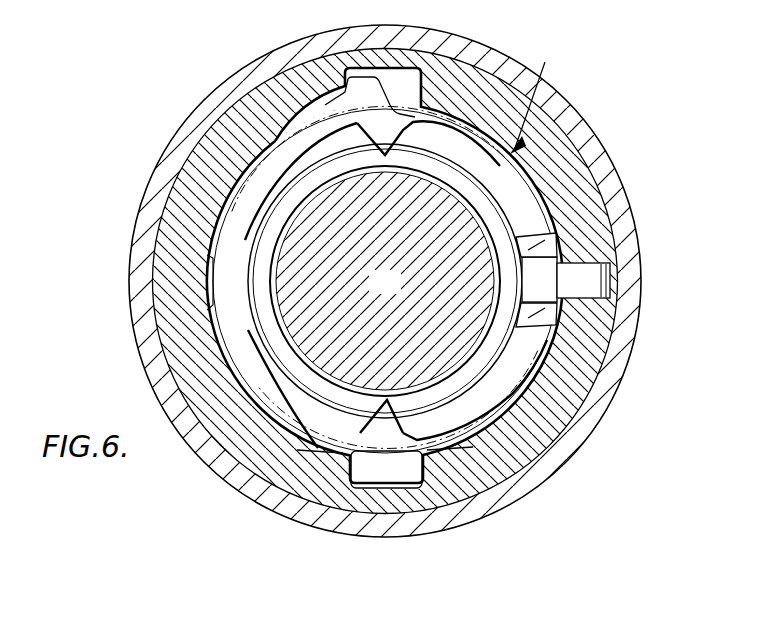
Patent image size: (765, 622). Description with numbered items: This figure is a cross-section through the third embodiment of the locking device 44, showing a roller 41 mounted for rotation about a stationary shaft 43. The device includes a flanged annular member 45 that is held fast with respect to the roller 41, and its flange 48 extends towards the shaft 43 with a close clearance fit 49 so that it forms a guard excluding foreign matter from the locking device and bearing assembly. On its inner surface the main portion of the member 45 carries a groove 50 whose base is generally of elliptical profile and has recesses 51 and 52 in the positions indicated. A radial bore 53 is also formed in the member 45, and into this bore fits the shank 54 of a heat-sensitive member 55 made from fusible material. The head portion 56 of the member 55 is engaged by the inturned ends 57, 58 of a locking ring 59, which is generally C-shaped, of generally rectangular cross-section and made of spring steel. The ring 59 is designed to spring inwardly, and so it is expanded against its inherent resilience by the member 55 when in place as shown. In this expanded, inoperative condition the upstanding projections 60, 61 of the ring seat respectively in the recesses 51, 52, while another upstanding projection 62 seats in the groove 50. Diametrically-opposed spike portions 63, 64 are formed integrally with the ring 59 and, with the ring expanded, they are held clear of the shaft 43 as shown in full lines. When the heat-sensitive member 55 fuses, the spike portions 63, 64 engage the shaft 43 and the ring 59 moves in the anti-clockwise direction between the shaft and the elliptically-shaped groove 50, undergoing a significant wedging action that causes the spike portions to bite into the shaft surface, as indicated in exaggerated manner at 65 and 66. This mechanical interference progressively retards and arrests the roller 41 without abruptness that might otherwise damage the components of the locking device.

The roller 41 is at (610, 391).
The stationary shaft 43 is at (372, 293).
The locking device 44 is at (565, 135).
The flanged annular member 45 is at (563, 187).
The flange 48 is at (250, 277).
The close clearance fit 49 is at (292, 352).
The groove 50 is at (400, 140).
The recess 51 is at (387, 157).
The recess 52 is at (330, 505).
The radial bore 53 is at (540, 250).
The shank 54 is at (587, 284).
The heat-sensitive member 55 is at (575, 290).
The head portion 56 is at (542, 318).
The inturned end 57 is at (560, 233).
The inturned end 58 is at (603, 392).
The locking ring 59 is at (517, 150).
The upstanding projection 60 is at (302, 55).
The upstanding projection 61 is at (532, 465).
The upstanding projection 62 is at (210, 260).
The spike portion 63 is at (327, 100).
The spike portion 64 is at (380, 418).
The bite of spike portion into shaft 65 is at (310, 160).
The bite of spike portion into shaft 66 is at (570, 428).